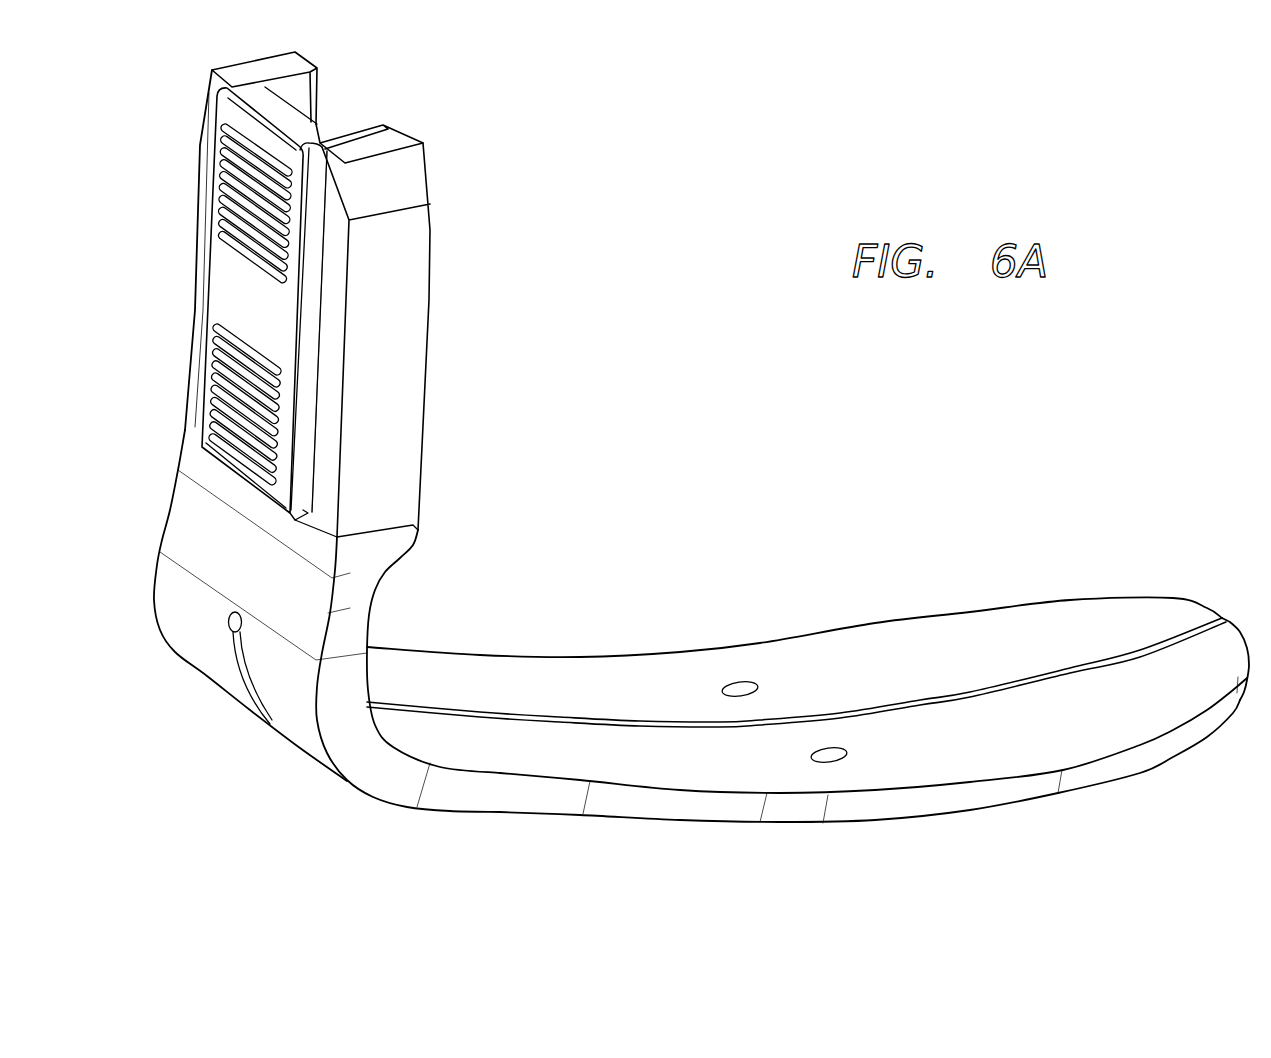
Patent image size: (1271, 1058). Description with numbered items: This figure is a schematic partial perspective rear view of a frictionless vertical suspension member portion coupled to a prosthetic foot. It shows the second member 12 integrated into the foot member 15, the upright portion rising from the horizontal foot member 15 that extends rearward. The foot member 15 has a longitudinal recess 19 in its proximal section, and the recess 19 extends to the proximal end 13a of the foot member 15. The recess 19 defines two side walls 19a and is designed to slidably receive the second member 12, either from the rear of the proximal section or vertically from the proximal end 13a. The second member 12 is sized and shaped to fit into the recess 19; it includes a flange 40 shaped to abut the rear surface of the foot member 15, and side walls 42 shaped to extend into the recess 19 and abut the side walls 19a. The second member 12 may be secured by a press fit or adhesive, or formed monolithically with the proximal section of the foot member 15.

The second member 12 is at (240, 288).
The proximal end 13a is at (204, 64).
The side walls 42 is at (335, 122).
The side walls 19a is at (318, 74).
The longitudinal recess 19 is at (337, 100).
The flange 40 is at (318, 223).
The foot member 15 is at (607, 672).